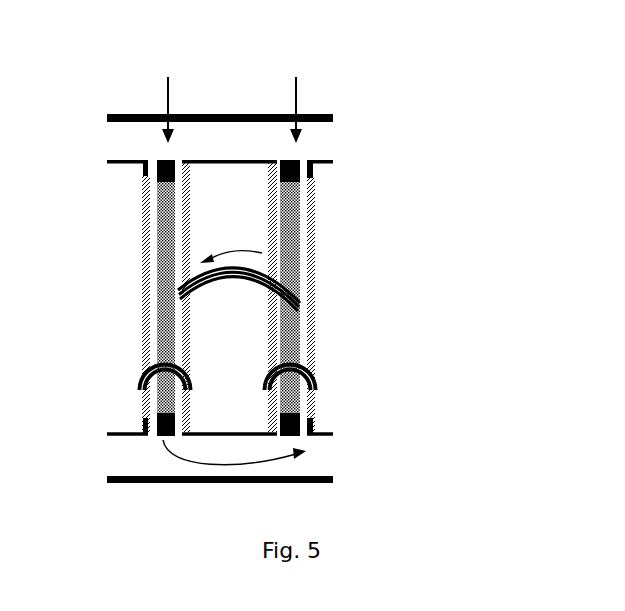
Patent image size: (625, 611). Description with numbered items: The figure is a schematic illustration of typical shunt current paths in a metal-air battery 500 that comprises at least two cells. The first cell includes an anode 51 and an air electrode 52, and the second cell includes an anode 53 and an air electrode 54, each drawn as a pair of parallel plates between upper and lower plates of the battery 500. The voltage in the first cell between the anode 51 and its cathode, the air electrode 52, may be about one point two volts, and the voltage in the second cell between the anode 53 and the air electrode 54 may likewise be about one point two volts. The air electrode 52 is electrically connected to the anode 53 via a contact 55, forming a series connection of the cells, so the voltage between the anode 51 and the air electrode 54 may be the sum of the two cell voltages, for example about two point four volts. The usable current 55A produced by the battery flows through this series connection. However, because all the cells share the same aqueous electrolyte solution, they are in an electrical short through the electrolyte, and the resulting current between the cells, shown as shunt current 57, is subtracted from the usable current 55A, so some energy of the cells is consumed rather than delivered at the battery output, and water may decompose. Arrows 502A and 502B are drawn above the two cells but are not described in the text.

The battery 500 is at (412, 83).
The first compression force 502A is at (166, 92).
The second compression force 502B is at (296, 92).
The anode 51 is at (150, 205).
The air electrode 52 is at (172, 239).
The anode 53 is at (301, 205).
The air electrode 54 is at (286, 241).
The contact 55 is at (279, 275).
The usable current 55A is at (262, 253).
The shunt current 57 is at (304, 453).